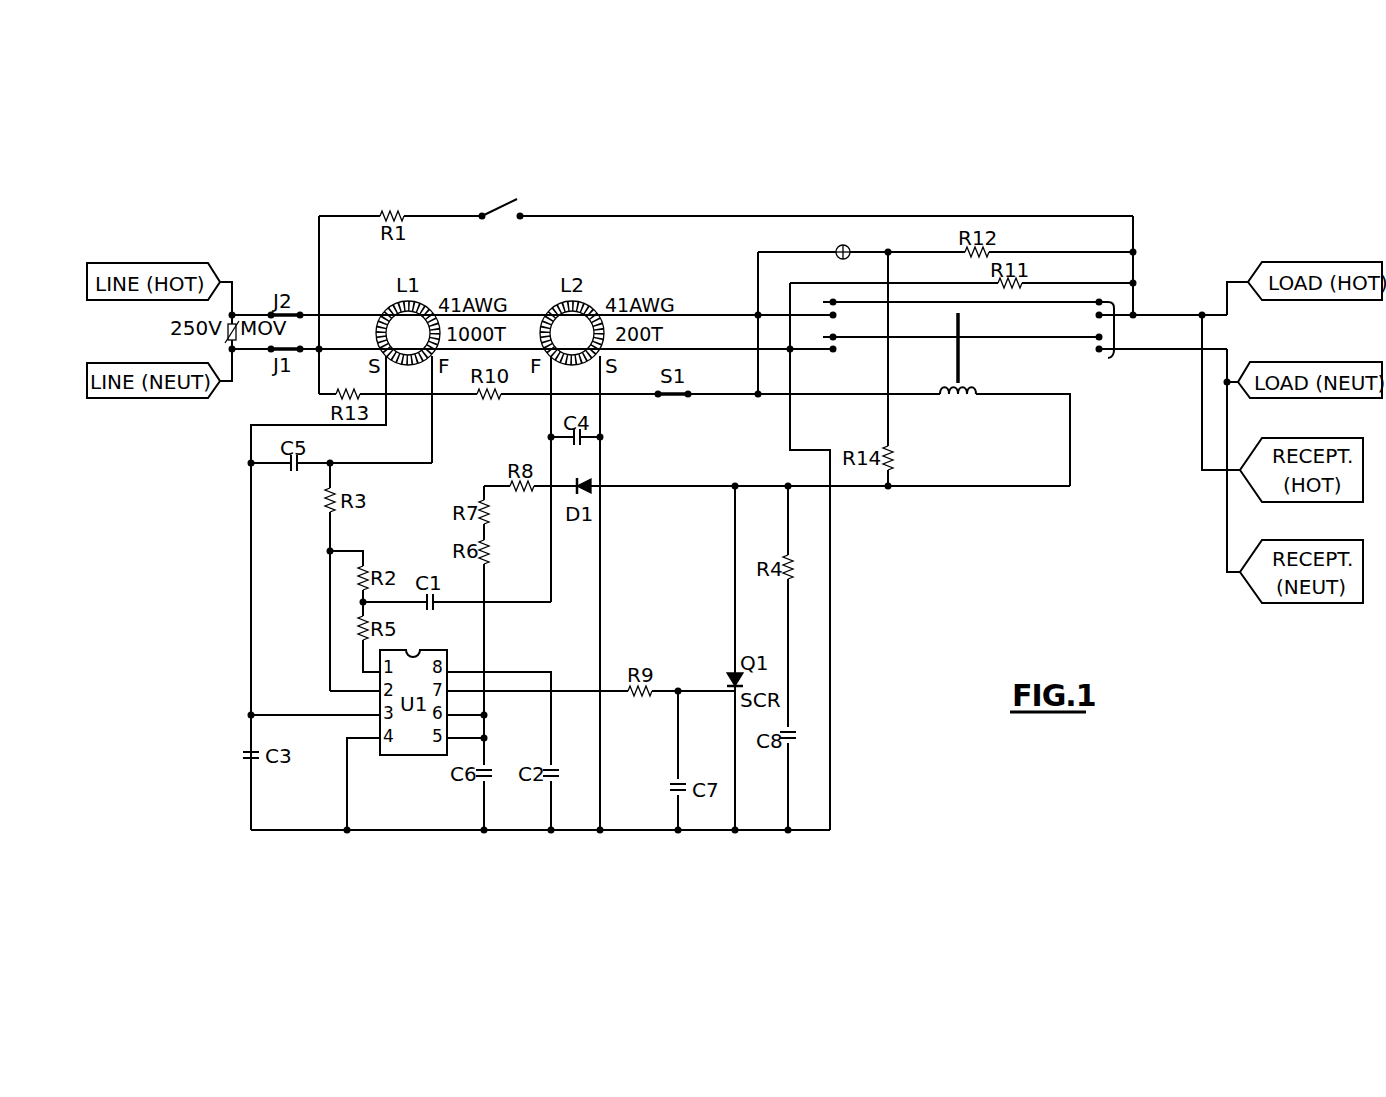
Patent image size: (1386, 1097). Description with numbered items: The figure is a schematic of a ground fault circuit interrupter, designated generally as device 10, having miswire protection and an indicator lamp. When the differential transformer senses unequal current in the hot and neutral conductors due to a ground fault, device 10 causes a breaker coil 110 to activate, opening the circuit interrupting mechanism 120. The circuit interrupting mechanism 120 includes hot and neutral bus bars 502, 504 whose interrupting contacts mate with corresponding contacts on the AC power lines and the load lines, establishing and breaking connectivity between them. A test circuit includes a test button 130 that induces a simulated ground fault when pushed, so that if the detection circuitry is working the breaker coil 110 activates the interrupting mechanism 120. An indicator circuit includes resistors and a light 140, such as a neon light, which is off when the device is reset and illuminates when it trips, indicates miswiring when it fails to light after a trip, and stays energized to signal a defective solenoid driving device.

The ground fault circuit interrupter 10 is at (858, 562).
The breaker coil 110 is at (975, 393).
The circuit interrupting mechanism 120 is at (1114, 327).
The test button 130 is at (500, 206).
The light 140 is at (844, 245).
The hot bus bar 502 is at (1053, 302).
The neutral bus bar 504 is at (1070, 337).